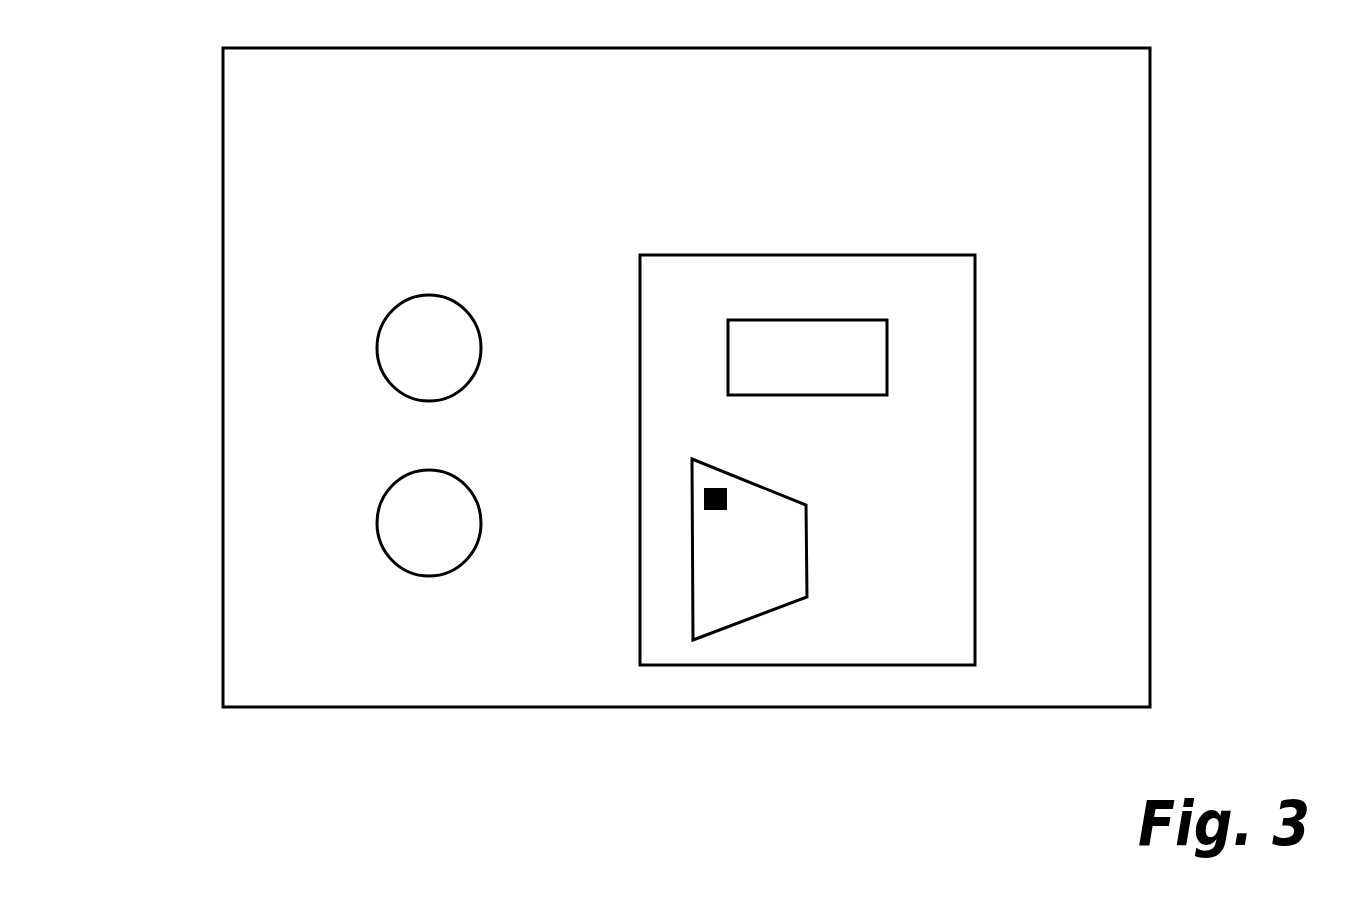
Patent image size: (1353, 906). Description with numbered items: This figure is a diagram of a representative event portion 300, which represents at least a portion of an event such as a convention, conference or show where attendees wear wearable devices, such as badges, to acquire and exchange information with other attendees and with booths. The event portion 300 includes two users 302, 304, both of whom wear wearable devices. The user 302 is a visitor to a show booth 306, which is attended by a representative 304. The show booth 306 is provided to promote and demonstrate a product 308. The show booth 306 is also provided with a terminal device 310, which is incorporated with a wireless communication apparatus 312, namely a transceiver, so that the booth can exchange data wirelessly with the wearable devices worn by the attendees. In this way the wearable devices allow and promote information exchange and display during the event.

The event portion 300 is at (1113, 41).
The user 302 is at (457, 292).
The representative 304 is at (457, 622).
The show booth 306 is at (960, 294).
The product 308 is at (881, 361).
The terminal device 310 is at (799, 569).
The wireless communication apparatus 312 is at (722, 488).